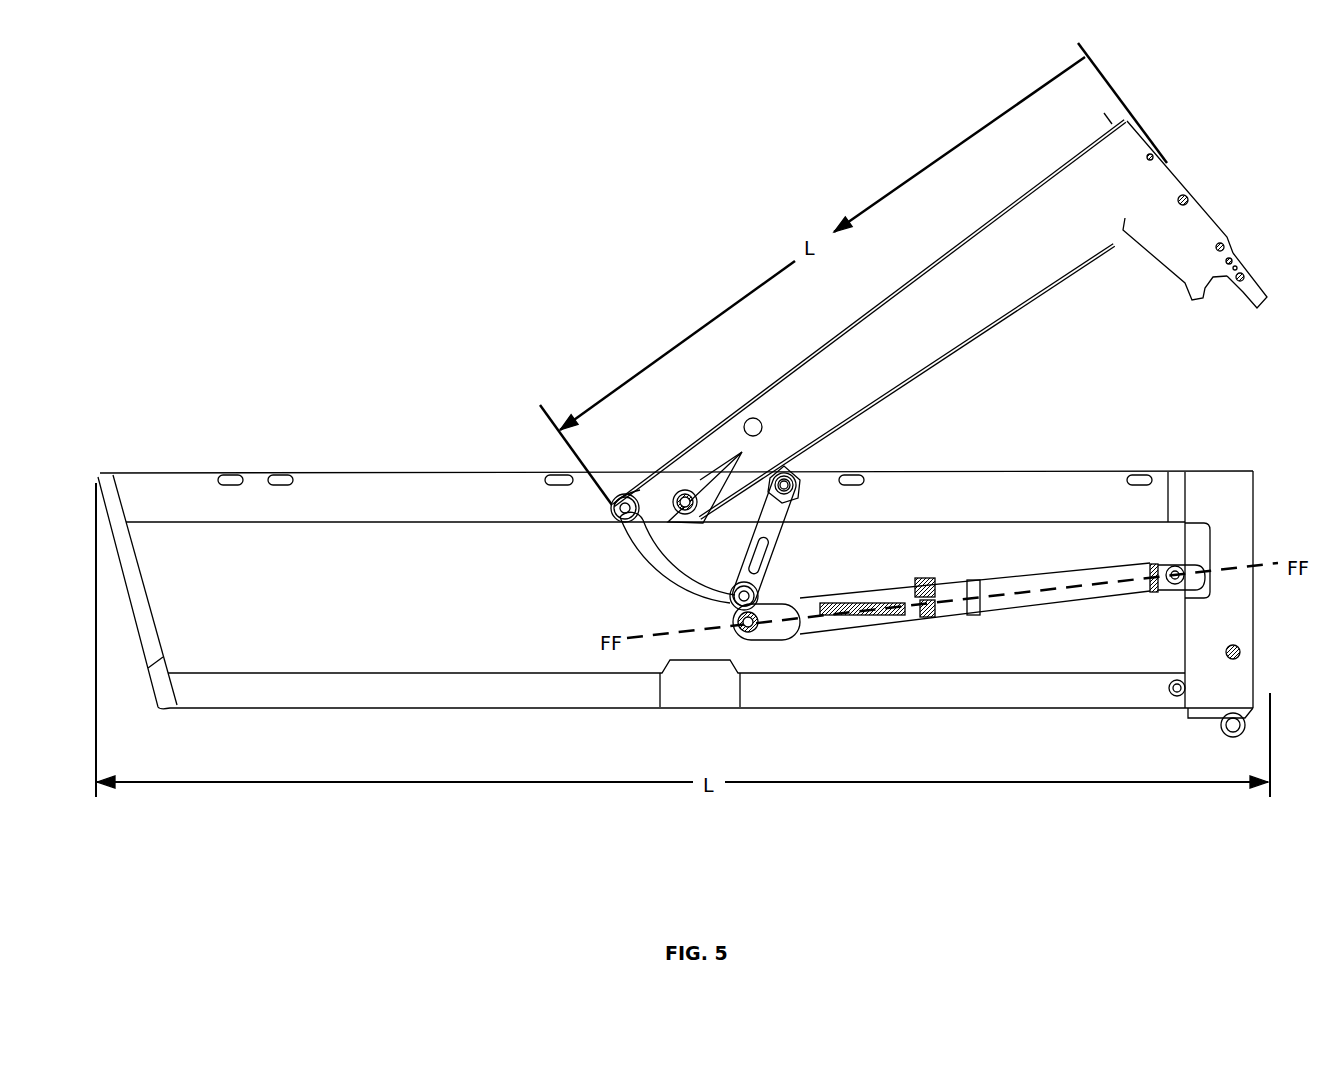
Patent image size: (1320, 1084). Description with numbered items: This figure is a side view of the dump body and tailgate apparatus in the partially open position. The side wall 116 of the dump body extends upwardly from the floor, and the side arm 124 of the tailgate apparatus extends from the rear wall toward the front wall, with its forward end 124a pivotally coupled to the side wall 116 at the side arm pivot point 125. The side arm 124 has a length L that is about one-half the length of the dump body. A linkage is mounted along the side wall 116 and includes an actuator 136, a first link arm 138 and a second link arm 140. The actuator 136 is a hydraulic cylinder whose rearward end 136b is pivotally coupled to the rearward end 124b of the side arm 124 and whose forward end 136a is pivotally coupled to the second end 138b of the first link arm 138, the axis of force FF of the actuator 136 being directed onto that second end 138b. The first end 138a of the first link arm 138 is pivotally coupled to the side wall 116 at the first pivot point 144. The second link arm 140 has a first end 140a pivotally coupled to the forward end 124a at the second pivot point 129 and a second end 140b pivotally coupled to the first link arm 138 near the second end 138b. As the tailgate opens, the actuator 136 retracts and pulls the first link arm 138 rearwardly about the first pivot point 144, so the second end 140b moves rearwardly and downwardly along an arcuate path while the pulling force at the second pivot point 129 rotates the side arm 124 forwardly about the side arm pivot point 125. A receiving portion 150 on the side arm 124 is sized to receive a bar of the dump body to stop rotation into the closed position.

The side wall 116 is at (859, 496).
The side arm 124 is at (920, 346).
The forward end of side arm 124a is at (664, 495).
The rearward end of side arm 124b is at (1145, 195).
The side arm pivot point 125 is at (684, 500).
The second pivot point 129 is at (616, 510).
The actuator 136 is at (1003, 602).
The forward end of actuator 136a is at (800, 628).
The rearward end of actuator 136b is at (1148, 583).
The first link arm 138 is at (762, 563).
The first end of first link arm 138a is at (787, 495).
The second end of first link arm 138b is at (753, 590).
The second link arm 140 is at (658, 557).
The first end of second link arm 140a is at (630, 527).
The second end of second link arm 140b is at (732, 597).
The first pivot point 144 is at (782, 478).
The receiving portion 150 is at (1195, 278).